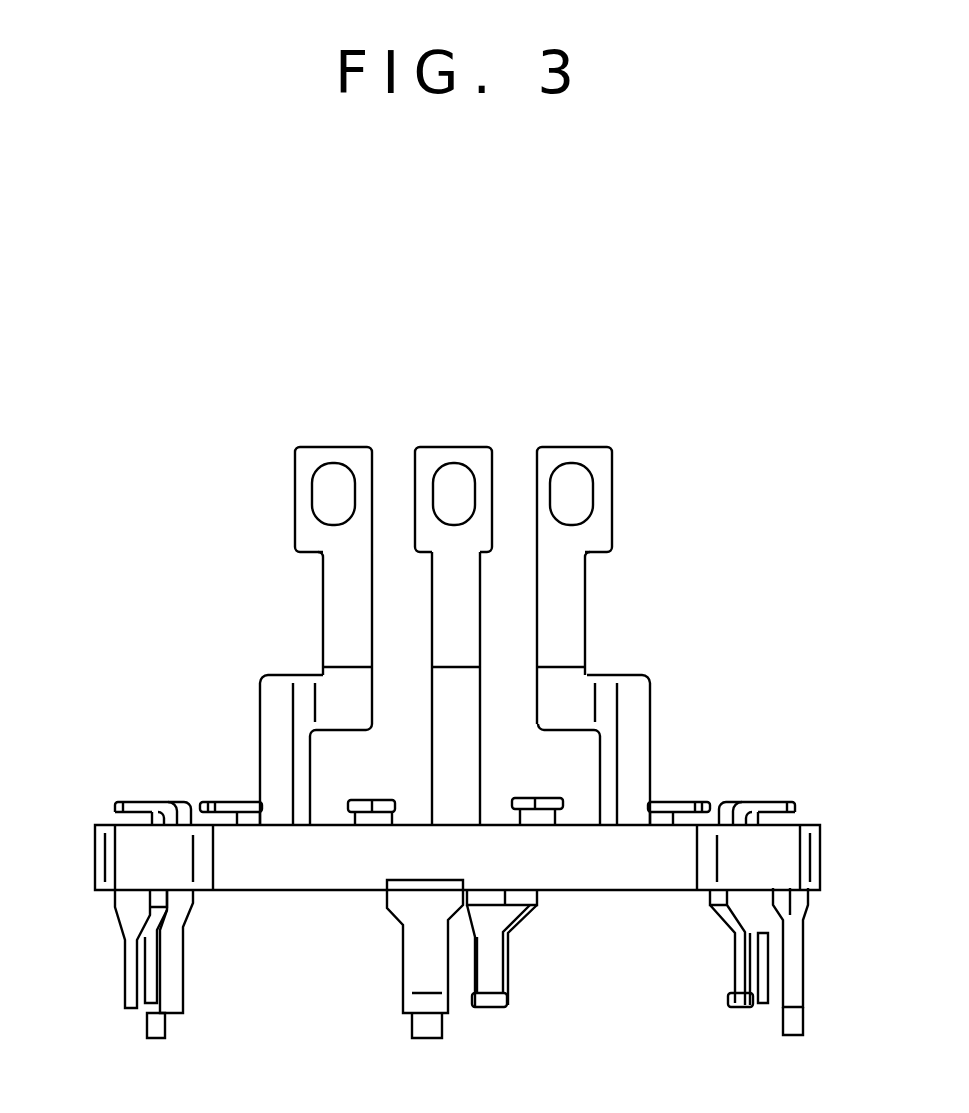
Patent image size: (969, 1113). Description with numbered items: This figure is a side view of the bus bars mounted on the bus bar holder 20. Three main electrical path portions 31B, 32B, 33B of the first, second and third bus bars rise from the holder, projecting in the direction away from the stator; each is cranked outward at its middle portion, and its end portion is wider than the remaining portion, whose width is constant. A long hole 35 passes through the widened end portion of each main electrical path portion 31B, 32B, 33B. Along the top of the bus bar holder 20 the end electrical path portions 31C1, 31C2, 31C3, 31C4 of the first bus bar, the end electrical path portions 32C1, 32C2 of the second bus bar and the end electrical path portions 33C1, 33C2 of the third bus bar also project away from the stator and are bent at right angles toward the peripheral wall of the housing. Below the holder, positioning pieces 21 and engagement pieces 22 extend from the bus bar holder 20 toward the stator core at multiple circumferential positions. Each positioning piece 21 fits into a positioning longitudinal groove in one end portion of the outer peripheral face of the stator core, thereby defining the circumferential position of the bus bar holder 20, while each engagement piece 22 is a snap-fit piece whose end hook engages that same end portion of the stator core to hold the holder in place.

The bus bar holder 20 is at (835, 868).
The positioning piece 21 is at (173, 983).
The engagement piece 22 is at (130, 983).
The main electrical path portion 31B is at (455, 447).
The main electrical path portion 32B is at (332, 447).
The main electrical path portion 33B is at (572, 447).
The long hole 35 is at (455, 508).
The end electrical path portion 31C1 is at (723, 797).
The end electrical path portion 31C2 is at (670, 797).
The end electrical path portion 31C3 is at (245, 800).
The end electrical path portion 31C4 is at (188, 802).
The end electrical path portion 32C1 is at (372, 830).
The end electrical path portion 32C2 is at (133, 802).
The end electrical path portion 33C1 is at (538, 830).
The end electrical path portion 33C2 is at (780, 795).